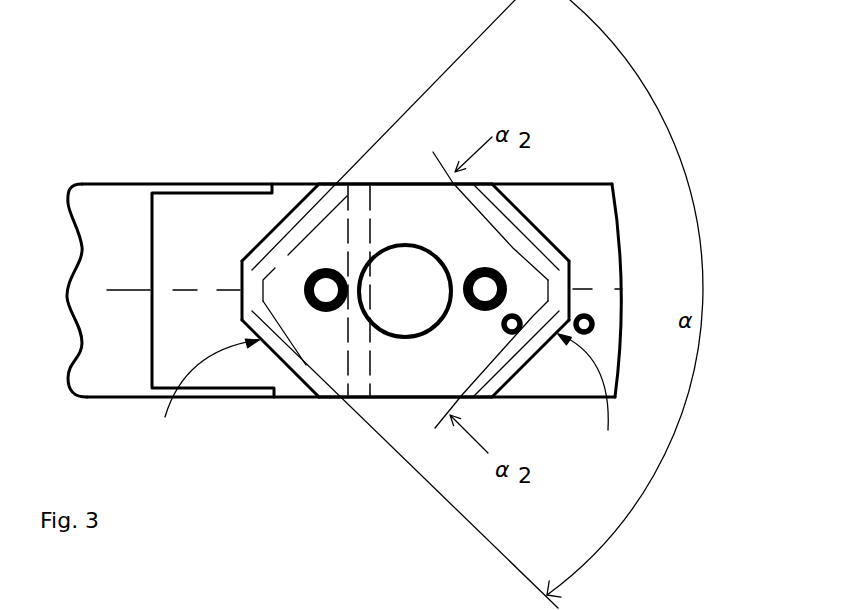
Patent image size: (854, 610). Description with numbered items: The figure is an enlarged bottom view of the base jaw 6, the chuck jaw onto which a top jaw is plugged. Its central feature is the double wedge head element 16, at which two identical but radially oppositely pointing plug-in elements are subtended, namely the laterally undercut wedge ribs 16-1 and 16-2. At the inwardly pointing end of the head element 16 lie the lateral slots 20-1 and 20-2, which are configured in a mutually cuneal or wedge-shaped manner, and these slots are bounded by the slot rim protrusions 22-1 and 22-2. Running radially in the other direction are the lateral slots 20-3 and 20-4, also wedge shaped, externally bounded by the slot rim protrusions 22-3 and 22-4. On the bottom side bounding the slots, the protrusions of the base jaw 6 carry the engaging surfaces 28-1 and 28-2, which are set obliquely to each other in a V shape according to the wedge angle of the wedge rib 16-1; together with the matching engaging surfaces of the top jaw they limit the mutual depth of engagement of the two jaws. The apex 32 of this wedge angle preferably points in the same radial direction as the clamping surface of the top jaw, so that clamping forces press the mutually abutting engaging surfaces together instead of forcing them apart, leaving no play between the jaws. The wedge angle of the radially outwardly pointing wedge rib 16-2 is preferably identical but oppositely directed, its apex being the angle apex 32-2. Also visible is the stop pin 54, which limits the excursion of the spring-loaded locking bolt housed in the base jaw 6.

The base jaw 6 is at (344, 274).
The double wedge head element 16 is at (397, 378).
The wedge rib 16-1 is at (200, 393).
The wedge rib 16-2 is at (594, 397).
The lateral slot 20-1 is at (295, 215).
The lateral slot 20-2 is at (278, 353).
The lateral slot 20-3 is at (535, 222).
The lateral slot 20-4 is at (533, 353).
The slot rim protrusion 22-1 is at (263, 240).
The slot rim protrusion 22-2 is at (332, 385).
The slot rim protrusion 22-3 is at (518, 218).
The slot rim protrusion 22-4 is at (505, 372).
The engaging surface 28-1 is at (332, 186).
The engaging surface 28-2 is at (305, 366).
The apex 32 is at (240, 283).
The angle apex 32-2 is at (573, 288).
The stop pin 54 is at (425, 200).